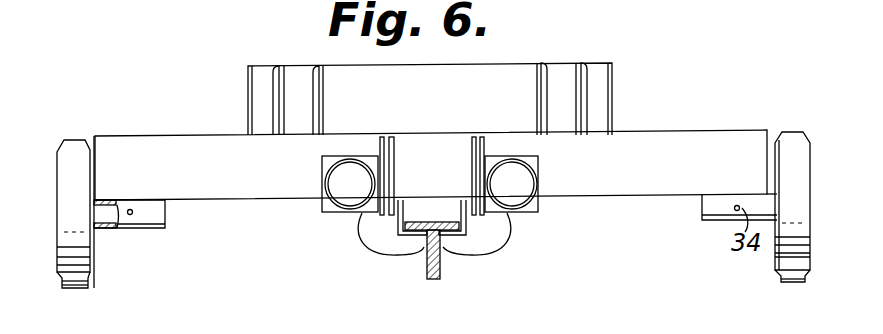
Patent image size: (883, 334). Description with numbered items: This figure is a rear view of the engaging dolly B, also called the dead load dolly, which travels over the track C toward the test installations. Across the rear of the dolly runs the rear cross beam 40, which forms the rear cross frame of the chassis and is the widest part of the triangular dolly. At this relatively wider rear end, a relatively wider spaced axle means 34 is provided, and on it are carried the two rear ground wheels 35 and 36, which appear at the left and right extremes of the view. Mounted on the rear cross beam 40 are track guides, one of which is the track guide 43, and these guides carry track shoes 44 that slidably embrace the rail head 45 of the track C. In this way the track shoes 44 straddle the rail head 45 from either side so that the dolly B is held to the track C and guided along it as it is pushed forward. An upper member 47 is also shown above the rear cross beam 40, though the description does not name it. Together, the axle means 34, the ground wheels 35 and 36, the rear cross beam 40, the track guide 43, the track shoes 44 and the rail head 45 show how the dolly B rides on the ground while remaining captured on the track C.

The axle means 34 is at (107, 216).
The ground wheel 35 is at (80, 260).
The ground wheel 36 is at (793, 253).
The rear cross beam 40 is at (600, 182).
The track guide 43 is at (488, 232).
The track shoe 44 is at (443, 238).
The rail head 45 is at (414, 222).
The upper block 47 is at (360, 60).
The engaging dolly B is at (640, 118).
The track C is at (421, 265).